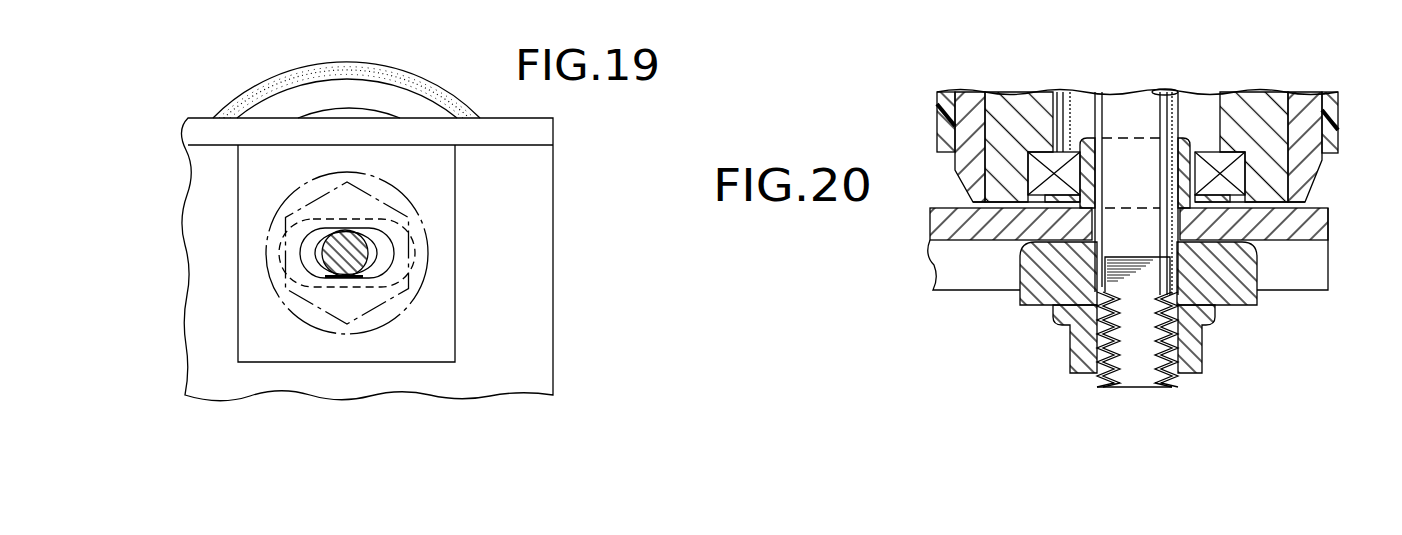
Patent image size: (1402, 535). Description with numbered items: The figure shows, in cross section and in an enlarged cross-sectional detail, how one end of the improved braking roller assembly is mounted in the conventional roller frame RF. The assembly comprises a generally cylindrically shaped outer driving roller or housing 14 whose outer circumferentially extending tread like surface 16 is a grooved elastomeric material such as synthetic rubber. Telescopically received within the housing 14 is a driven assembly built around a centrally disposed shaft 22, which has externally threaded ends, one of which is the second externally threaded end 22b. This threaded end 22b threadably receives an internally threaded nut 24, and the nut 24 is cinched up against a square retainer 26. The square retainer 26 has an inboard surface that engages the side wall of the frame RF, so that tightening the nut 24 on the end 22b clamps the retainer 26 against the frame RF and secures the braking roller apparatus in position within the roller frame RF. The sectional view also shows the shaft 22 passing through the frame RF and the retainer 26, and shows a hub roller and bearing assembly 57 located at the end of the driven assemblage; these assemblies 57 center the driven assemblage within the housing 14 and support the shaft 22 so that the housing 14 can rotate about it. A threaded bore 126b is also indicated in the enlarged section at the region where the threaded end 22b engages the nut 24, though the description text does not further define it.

In FIG. 19, the outer driving roller or housing 14 is at (355, 98).
In FIG. 20, the outer driving roller or housing 14 is at (973, 92).
In FIG. 19, the tread like surface 16 is at (267, 80).
In FIG. 20, the tread like surface 16 is at (935, 115).
In FIG. 19, the shaft 22 is at (347, 255).
In FIG. 20, the shaft 22 is at (1135, 110).
In FIG. 20, the second externally threaded end 22b is at (1137, 362).
In FIG. 19, the internally threaded nut 24 is at (323, 176).
In FIG. 20, the internally threaded nut 24 is at (1068, 349).
In FIG. 19, the square retainer 26 is at (448, 188).
In FIG. 20, the square retainer 26 is at (1240, 293).
In FIG. 20, the hub roller and bearing assembly 57 is at (1018, 98).
In FIG. 20, the threaded bore 126b is at (1187, 224).
In FIG. 19, the roller frame RF is at (537, 300).
In FIG. 20, the roller frame RF is at (935, 275).